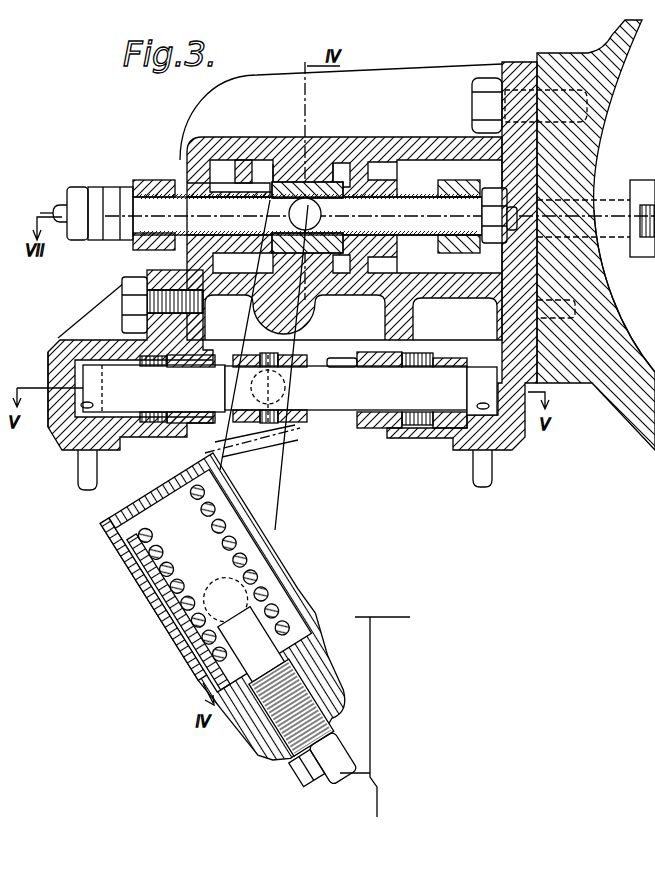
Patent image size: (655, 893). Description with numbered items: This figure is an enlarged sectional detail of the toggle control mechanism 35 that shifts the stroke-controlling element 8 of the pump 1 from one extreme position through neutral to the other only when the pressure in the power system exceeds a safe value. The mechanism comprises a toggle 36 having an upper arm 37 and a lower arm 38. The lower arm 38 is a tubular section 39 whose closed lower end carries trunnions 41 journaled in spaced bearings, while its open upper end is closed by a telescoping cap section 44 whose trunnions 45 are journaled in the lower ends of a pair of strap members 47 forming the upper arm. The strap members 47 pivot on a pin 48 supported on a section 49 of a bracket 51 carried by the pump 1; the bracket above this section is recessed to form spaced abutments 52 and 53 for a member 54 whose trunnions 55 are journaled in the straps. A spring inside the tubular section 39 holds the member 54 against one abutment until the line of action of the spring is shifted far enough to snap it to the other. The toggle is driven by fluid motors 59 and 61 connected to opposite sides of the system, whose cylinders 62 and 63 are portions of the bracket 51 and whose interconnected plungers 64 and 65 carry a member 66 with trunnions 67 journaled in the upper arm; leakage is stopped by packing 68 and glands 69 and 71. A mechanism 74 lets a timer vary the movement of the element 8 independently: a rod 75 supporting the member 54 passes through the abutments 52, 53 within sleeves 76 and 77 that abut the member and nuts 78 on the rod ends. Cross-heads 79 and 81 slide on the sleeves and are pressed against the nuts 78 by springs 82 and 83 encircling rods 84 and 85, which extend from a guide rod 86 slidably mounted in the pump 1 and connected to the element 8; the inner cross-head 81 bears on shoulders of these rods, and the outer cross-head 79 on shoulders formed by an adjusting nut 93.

The pump 1 is at (630, 410).
The stroke-controlling element 8 is at (654, 170).
The mechanism 35 is at (282, 292).
The toggle 36 is at (276, 532).
The upper arm 37 is at (283, 450).
The lower arm 38 is at (310, 601).
The tubular section 39 is at (310, 624).
The trunnions 41 is at (238, 705).
The telescoping cap section 44 is at (229, 634).
The trunnions 45 is at (270, 592).
The strap members 47 is at (272, 490).
The pin 48 is at (310, 305).
The section 49 is at (232, 311).
The bracket 51 is at (187, 150).
The abutment 52 is at (247, 165).
The abutment 53 is at (343, 165).
The member 54 is at (285, 190).
The trunnions 55 is at (289, 213).
The fluid motor 59 is at (82, 412).
The fluid motor 61 is at (503, 418).
The cylinder 62 is at (75, 362).
The cylinder 63 is at (477, 375).
The plunger 64 is at (153, 388).
The plunger 65 is at (346, 388).
The member 66 is at (232, 446).
The trunnions 67 is at (285, 388).
The packing 68 is at (414, 424).
The gland 69 is at (205, 424).
The gland 71 is at (364, 426).
The mechanism 74 is at (307, 208).
The rod 75 is at (307, 215).
The sleeve 76 is at (192, 188).
The sleeve 77 is at (484, 192).
The nuts 78 is at (498, 242).
The cross-head 79 is at (147, 188).
The cross-head 81 is at (442, 180).
The spring 82 is at (443, 211).
The spring 83 is at (2, 192).
The rod 84 is at (60, 205).
The rod 85 is at (10, 272).
The guide rod 86 is at (618, 230).
The adjusting nut 93 is at (95, 243).